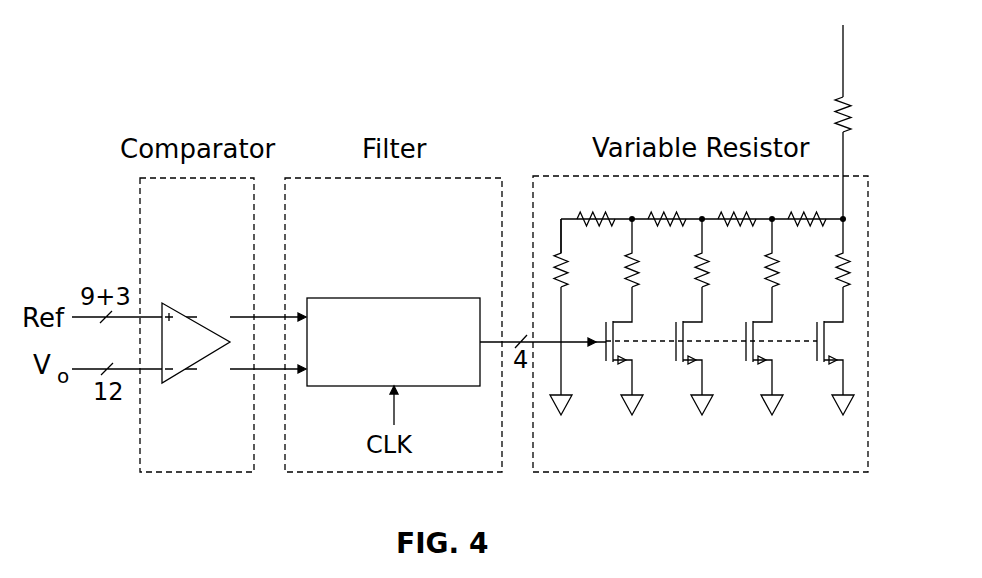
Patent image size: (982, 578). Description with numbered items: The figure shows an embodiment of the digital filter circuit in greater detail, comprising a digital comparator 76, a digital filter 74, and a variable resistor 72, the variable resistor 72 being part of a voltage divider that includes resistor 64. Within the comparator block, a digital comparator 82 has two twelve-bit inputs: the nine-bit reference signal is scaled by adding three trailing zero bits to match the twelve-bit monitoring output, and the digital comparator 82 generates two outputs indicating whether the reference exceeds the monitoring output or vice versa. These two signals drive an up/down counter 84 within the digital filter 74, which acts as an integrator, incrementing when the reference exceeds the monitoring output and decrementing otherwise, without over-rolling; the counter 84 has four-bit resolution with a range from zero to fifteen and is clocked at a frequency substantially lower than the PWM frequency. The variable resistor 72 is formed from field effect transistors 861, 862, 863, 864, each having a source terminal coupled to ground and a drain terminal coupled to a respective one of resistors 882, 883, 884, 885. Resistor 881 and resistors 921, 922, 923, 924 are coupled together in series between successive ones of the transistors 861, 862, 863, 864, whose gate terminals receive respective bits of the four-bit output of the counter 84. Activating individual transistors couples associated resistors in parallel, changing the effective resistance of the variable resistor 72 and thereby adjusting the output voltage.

The resistor 64 is at (840, 103).
The variable resistor 72 is at (587, 175).
The digital filter 74 is at (338, 175).
The digital comparator 76 is at (137, 206).
The digital comparator 82 is at (196, 316).
The up/down counter 84 is at (392, 298).
The resistor 921 is at (607, 213).
The resistor 922 is at (678, 213).
The resistor 923 is at (748, 213).
The resistor 924 is at (818, 213).
The resistor 881 is at (566, 266).
The resistor 882 is at (637, 266).
The resistor 883 is at (707, 266).
The resistor 884 is at (777, 266).
The resistor 885 is at (841, 266).
The field effect transistor 861 is at (611, 369).
The field effect transistor 862 is at (681, 369).
The field effect transistor 863 is at (751, 369).
The field effect transistor 864 is at (822, 369).